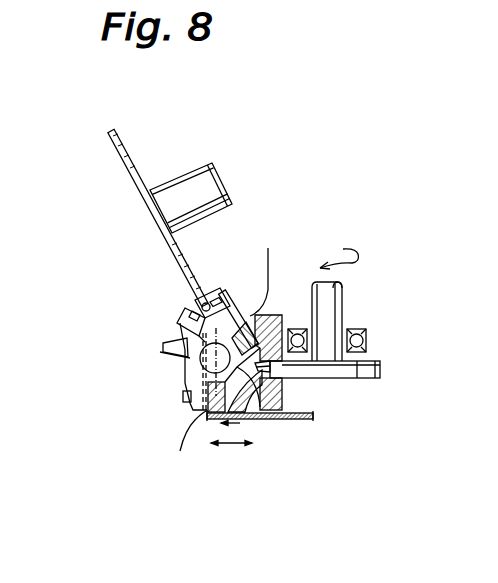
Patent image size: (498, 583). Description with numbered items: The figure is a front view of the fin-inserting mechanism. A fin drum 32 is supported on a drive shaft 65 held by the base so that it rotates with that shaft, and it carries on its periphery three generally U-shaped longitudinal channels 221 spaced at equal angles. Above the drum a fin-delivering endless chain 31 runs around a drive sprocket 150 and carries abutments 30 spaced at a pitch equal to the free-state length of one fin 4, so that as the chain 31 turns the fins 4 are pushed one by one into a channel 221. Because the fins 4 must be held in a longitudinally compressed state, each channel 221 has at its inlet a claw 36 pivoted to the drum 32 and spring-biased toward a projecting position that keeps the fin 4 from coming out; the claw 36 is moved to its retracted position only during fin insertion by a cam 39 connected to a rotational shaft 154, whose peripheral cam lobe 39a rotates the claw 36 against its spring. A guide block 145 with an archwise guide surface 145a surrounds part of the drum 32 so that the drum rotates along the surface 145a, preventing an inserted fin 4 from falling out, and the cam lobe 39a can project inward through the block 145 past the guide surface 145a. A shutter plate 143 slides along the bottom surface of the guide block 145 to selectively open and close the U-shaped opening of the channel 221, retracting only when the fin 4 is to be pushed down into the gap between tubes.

The fin 4 is at (223, 350).
The abutment 30 is at (230, 296).
The fin-delivering endless chain 31 is at (205, 299).
The fin drum 32 is at (186, 367).
The claw 36 is at (182, 398).
The cam 39 is at (367, 380).
The cam lobe 39a is at (278, 376).
The drive shaft 65 is at (165, 352).
The shutter plate 143 is at (293, 421).
The guide block 145 is at (268, 316).
The guide surface 145a is at (263, 420).
The drive sprocket 150 is at (233, 185).
The rotational shaft 154 is at (333, 299).
The longitudinal channel 221 is at (178, 333).